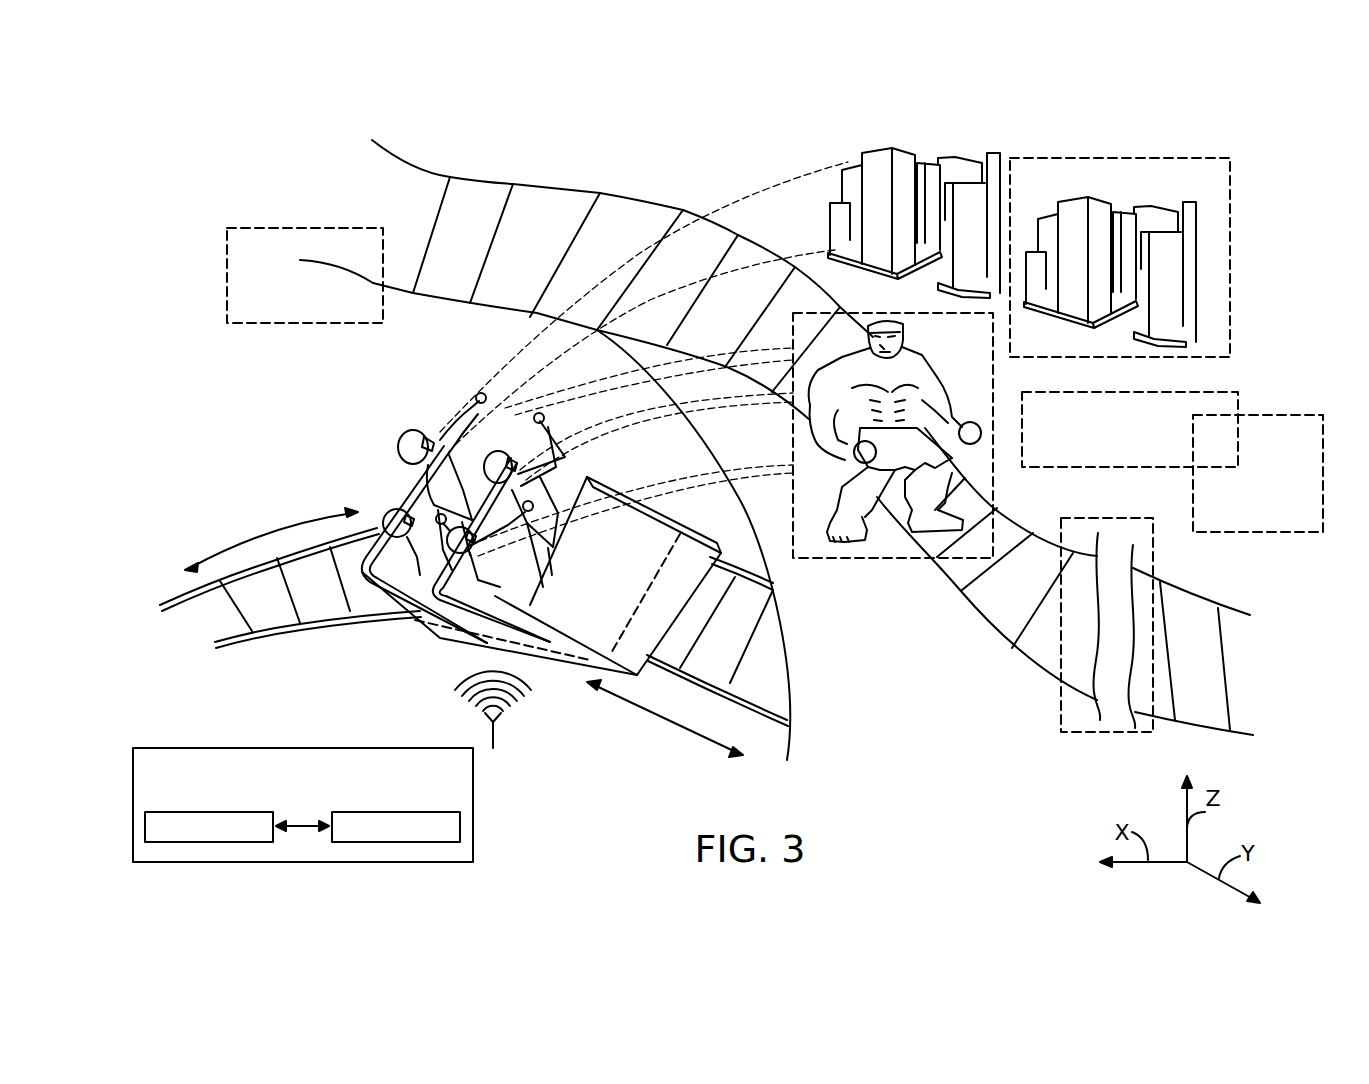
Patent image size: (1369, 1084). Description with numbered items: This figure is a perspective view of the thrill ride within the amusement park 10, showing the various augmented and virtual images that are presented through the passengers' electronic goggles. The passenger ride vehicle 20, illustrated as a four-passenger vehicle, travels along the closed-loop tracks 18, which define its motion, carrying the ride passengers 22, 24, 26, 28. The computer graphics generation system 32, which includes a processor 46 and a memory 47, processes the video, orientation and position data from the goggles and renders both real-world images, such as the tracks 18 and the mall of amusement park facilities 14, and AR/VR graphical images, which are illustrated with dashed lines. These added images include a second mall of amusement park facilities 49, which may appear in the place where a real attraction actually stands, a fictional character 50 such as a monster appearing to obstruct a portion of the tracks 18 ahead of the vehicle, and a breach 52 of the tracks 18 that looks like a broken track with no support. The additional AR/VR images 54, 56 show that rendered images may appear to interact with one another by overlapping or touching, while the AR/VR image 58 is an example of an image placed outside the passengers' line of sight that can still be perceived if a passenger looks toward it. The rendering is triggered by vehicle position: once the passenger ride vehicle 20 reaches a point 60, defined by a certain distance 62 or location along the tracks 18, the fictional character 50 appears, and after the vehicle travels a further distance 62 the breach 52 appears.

The amusement park 10 is at (1193, 126).
The mall of amusement park facilities 14 is at (877, 155).
The tracks 18 is at (528, 182).
The passenger ride vehicle 20 is at (662, 530).
The ride passenger 22 is at (508, 458).
The ride passenger 24 is at (487, 627).
The ride passenger 26 is at (408, 437).
The ride passenger 28 is at (397, 515).
The computer graphics generation system 32 is at (305, 748).
The processor 46 is at (145, 826).
The memory 47 is at (460, 825).
The second mall of amusement park facilities 49 is at (1232, 245).
The fictional character 50 is at (893, 558).
The breach of the tracks 52 is at (1060, 705).
The additional AR/VR image 54 is at (1238, 402).
The additional AR/VR image 56 is at (1258, 532).
The AR/VR image 58 is at (255, 227).
The point 60 is at (258, 520).
The distance 62 is at (655, 726).